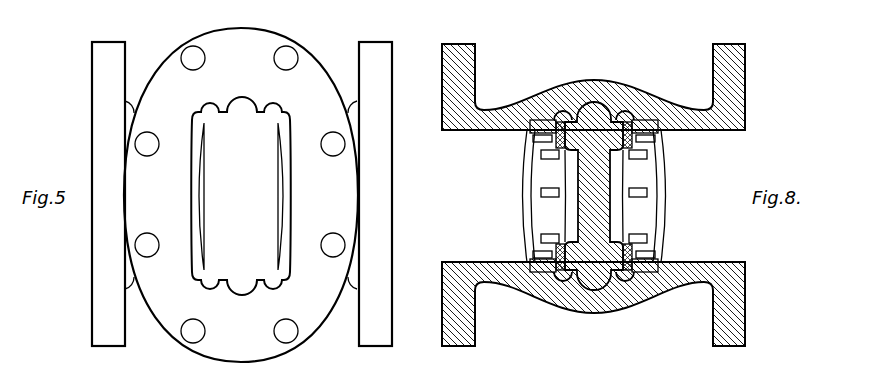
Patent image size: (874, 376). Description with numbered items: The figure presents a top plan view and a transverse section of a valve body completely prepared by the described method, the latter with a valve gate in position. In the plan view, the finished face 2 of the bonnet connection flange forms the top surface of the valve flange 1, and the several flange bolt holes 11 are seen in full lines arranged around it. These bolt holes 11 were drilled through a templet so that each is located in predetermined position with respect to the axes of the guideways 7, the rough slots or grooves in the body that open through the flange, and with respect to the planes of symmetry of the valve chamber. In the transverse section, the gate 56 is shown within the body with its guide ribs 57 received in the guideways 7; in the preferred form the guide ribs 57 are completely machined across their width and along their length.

In FIG. 5, the valve flange 1 is at (241, 28).
In FIG. 5, the finished face of the bonnet connection flange 2 is at (310, 60).
In FIG. 8, the finished face of the bonnet connection flange 2 is at (593, 210).
In FIG. 5, the guideways 7 is at (242, 99).
In FIG. 8, the guideways 7 is at (596, 98).
In FIG. 5, the flange bolt holes 11 is at (147, 140).
In FIG. 8, the gate 56 is at (594, 201).
In FIG. 8, the guide ribs 57 is at (600, 110).